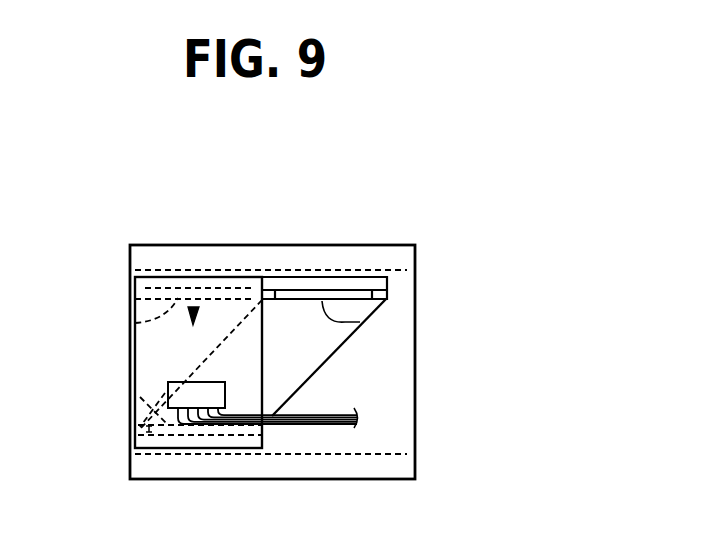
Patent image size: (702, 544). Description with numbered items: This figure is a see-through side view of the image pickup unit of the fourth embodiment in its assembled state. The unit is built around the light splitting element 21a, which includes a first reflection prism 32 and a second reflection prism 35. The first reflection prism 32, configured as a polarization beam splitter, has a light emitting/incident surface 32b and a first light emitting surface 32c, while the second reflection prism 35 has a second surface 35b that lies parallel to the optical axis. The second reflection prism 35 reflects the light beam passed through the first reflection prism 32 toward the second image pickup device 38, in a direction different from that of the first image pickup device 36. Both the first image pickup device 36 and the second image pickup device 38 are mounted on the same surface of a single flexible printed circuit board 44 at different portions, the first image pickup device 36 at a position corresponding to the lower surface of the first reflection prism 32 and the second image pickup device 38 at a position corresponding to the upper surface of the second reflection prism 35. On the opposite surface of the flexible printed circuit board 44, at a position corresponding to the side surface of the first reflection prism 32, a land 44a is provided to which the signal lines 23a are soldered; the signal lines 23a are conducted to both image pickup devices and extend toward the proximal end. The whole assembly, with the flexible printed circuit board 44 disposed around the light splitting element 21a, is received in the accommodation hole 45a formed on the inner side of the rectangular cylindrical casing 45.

The casing 45 is at (160, 253).
The accommodation hole 45a is at (142, 287).
The light splitting element 21a is at (206, 278).
The flexible printed circuit board 44 is at (218, 318).
The first reflection prism 32 is at (147, 372).
The light emitting/incident surface 32b is at (131, 323).
The first light emitting surface 32c is at (138, 399).
The first image pickup device 36 is at (145, 428).
The second image pickup device 38 is at (357, 293).
The second surface 35b is at (360, 322).
The second reflection prism 35 is at (312, 330).
The land 44a is at (217, 393).
The signal lines 23a is at (338, 427).